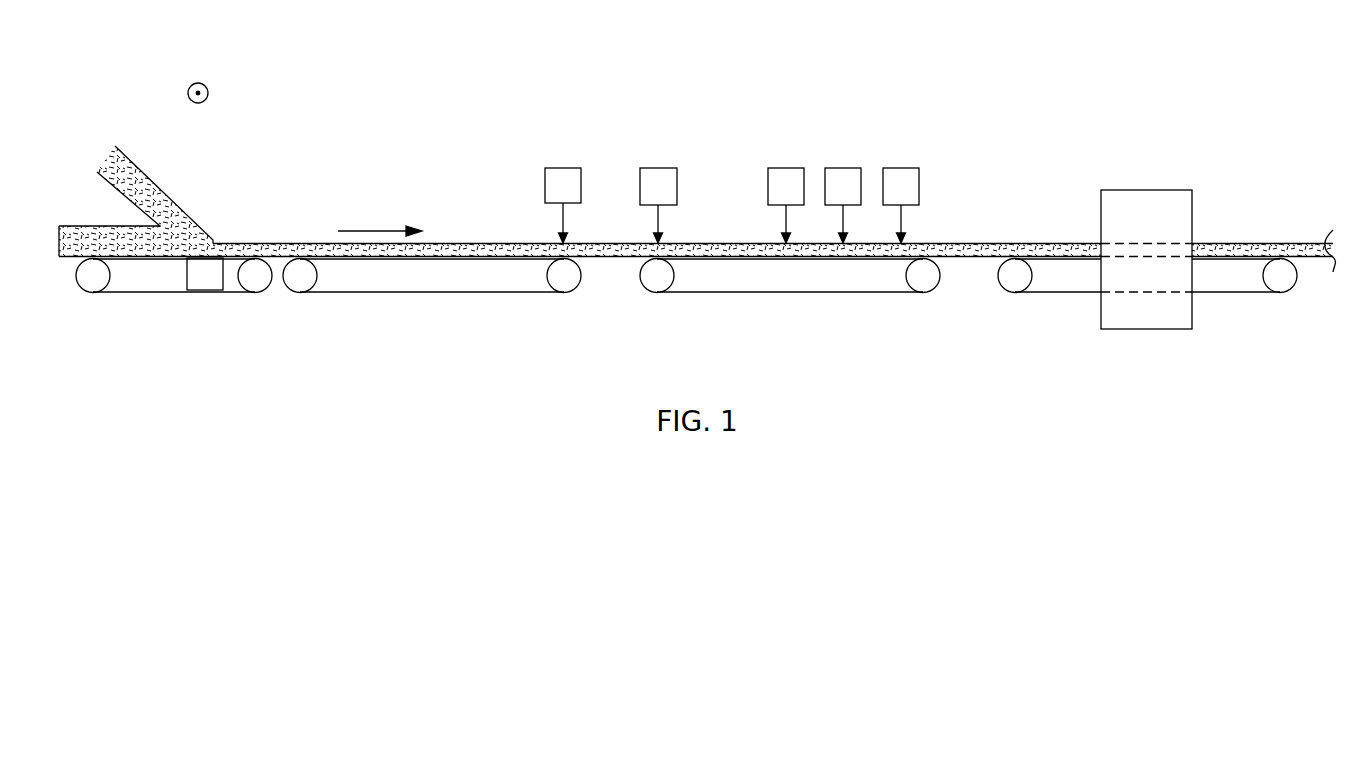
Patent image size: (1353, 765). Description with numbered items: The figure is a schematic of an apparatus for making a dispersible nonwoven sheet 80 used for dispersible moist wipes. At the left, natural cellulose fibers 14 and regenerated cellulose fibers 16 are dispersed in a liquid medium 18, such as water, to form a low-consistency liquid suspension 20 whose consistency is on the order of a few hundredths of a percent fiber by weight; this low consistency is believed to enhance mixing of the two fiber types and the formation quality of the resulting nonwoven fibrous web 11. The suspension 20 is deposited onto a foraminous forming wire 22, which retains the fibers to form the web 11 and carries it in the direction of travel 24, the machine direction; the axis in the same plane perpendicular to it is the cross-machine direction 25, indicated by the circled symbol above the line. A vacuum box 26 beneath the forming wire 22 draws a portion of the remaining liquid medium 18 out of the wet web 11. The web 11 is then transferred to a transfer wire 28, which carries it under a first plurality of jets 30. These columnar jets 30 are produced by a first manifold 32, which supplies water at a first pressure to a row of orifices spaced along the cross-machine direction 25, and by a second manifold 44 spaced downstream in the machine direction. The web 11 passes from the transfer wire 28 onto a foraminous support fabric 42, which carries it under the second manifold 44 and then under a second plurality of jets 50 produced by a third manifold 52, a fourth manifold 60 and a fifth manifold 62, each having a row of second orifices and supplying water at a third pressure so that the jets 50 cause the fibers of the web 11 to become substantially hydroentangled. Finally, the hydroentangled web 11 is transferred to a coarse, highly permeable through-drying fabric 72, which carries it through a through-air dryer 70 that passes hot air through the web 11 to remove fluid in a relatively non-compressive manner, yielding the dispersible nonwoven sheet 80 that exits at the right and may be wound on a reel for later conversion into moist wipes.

The nonwoven fibrous web 11 is at (278, 245).
The natural cellulose fibers 14 is at (150, 192).
The regenerated cellulose fibers 16 is at (90, 237).
The liquid medium 18 is at (131, 181).
The liquid suspension 20 is at (188, 248).
The forming wire 22 is at (155, 260).
The direction of travel 24 is at (380, 219).
The cross-machine direction 25 is at (199, 83).
The vacuum box 26 is at (218, 284).
The transfer wire 28 is at (447, 259).
The first plurality of jets 30 is at (560, 221).
The first manifold 32 is at (576, 196).
The support fabric 42 is at (738, 259).
The second manifold 44 is at (671, 196).
The second plurality of jets 50 is at (784, 218).
The third manifold 52 is at (799, 196).
The fourth manifold 60 is at (856, 196).
The fifth manifold 62 is at (914, 196).
The through-air dryer 70 is at (1148, 190).
The through-drying fabric 72 is at (1227, 259).
The dispersible nonwoven sheet 80 is at (1305, 243).